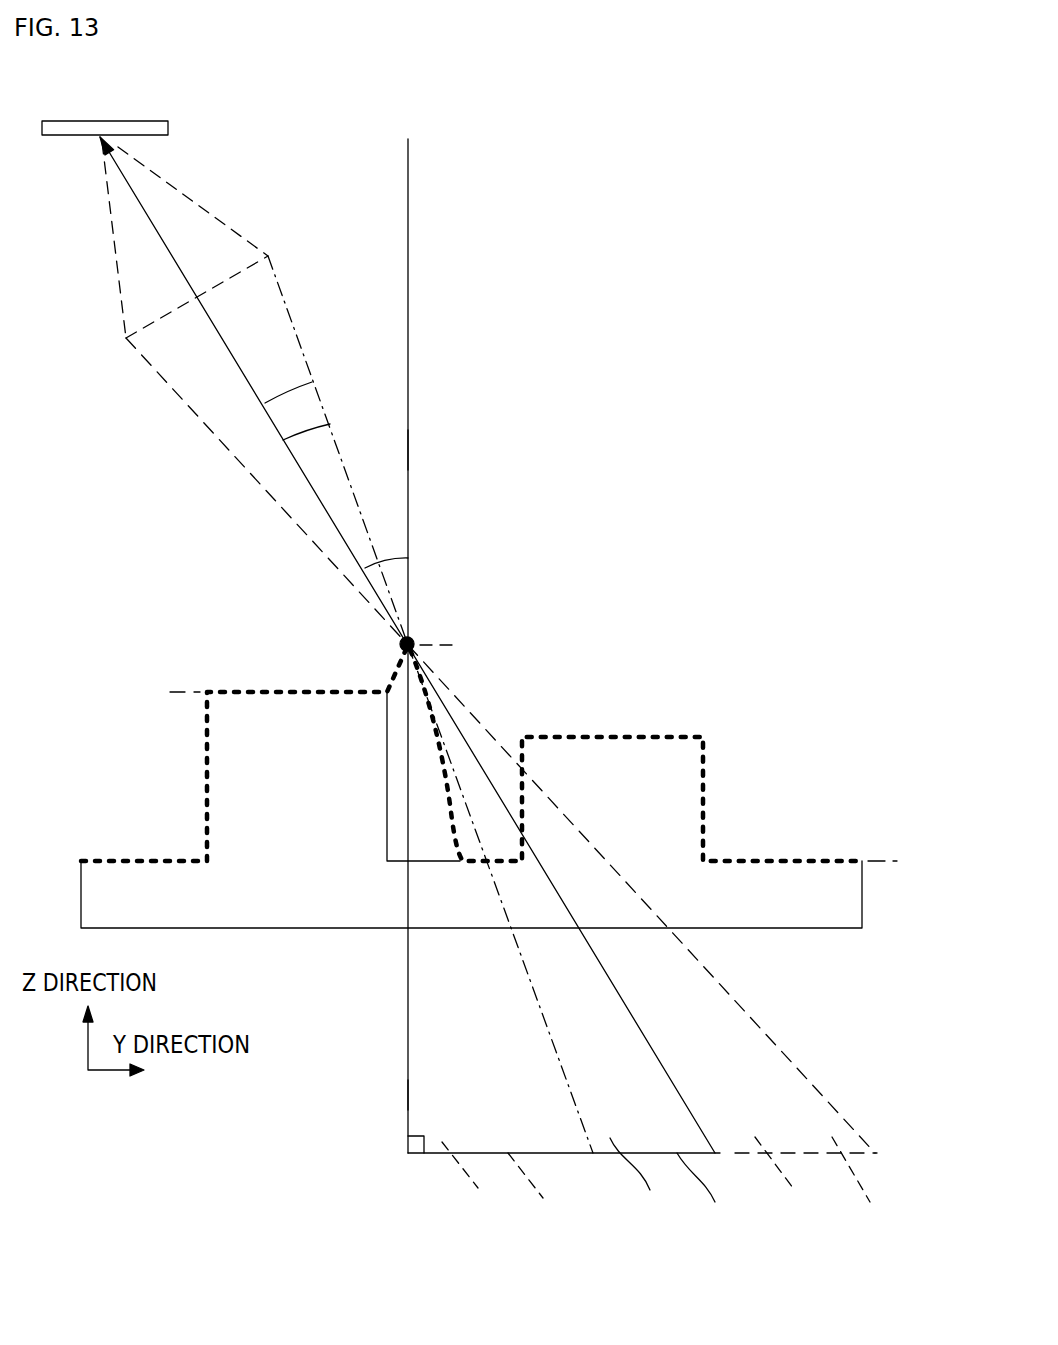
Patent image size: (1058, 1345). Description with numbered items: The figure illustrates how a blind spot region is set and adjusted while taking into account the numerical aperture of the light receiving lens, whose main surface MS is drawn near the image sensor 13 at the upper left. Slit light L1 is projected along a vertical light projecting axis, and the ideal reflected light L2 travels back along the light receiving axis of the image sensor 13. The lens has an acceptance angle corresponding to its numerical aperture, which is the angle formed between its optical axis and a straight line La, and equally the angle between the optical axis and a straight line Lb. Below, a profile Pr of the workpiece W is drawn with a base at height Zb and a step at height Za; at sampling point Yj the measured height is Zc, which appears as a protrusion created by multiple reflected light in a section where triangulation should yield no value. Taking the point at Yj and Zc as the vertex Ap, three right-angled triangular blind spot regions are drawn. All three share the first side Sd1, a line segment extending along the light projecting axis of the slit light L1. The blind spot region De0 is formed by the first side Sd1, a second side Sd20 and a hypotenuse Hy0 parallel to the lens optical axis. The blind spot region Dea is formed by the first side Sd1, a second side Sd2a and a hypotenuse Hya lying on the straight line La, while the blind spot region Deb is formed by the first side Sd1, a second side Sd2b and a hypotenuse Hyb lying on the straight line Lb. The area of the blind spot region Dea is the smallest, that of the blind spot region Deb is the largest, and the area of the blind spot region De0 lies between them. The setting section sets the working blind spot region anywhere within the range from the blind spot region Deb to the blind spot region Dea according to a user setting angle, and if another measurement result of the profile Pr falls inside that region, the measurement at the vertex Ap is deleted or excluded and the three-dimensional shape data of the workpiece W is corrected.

The image sensor 13 is at (170, 125).
The main surface of the light receiving lens MS is at (238, 273).
The straight line La is at (298, 327).
The straight line Lb is at (165, 380).
The slit light L1 is at (408, 452).
The ideal reflected light L2 is at (330, 424).
The sampling point Yj is at (409, 630).
The vertex Ap is at (414, 638).
The height Zc is at (454, 648).
The height Za is at (165, 694).
The height Zb is at (902, 863).
The profile Pr is at (545, 737).
The workpiece W is at (800, 912).
The first side Sd1 is at (405, 1075).
The hypotenuse Hya is at (577, 1105).
The hypotenuse Hy0 is at (680, 1090).
The hypotenuse Hyb is at (850, 1120).
The blind spot region Dea is at (472, 1187).
The second side Sd2a is at (542, 1200).
The blind spot region De0 is at (641, 1185).
The second side Sd20 is at (712, 1200).
The blind spot region Deb is at (787, 1184).
The second side Sd2b is at (867, 1192).